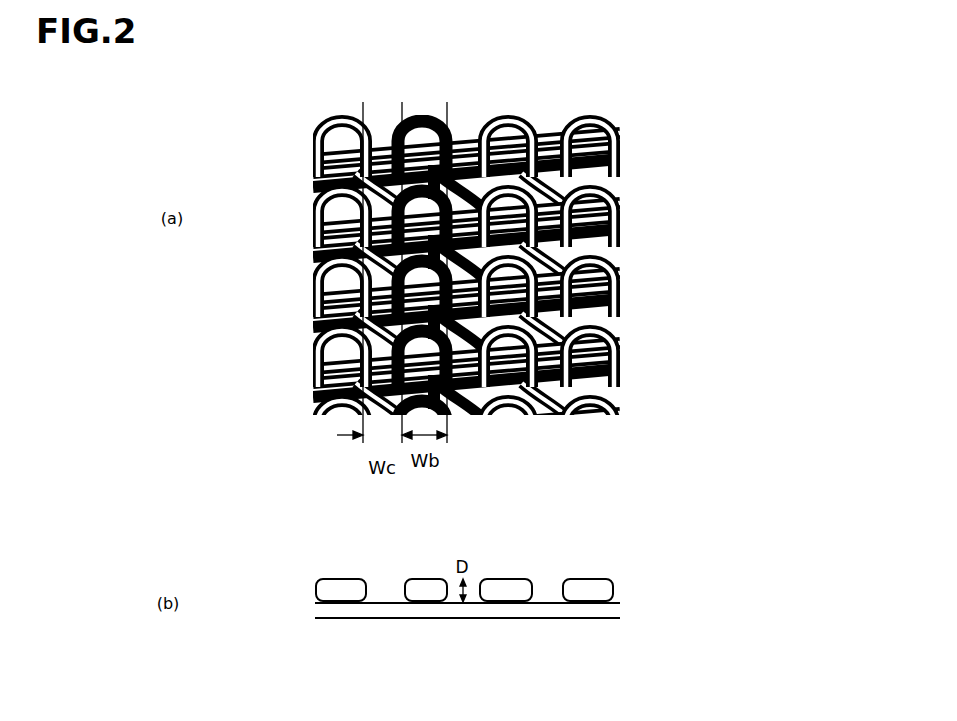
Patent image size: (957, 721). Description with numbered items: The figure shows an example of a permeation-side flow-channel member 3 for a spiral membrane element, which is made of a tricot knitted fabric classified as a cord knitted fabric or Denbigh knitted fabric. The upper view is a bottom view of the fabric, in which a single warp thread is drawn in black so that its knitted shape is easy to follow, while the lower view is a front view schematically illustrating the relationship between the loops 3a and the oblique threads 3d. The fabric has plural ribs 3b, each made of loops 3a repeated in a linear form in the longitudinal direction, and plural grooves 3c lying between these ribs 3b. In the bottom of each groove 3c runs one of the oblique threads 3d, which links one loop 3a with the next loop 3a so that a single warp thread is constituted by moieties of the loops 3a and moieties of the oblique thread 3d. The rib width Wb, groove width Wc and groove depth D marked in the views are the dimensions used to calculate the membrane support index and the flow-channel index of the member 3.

The permeation-side flow-channel member 3 is at (632, 258).
The loops 3a is at (576, 130).
The ribs 3b is at (434, 111).
The grooves 3c is at (386, 116).
The oblique threads 3d is at (550, 407).